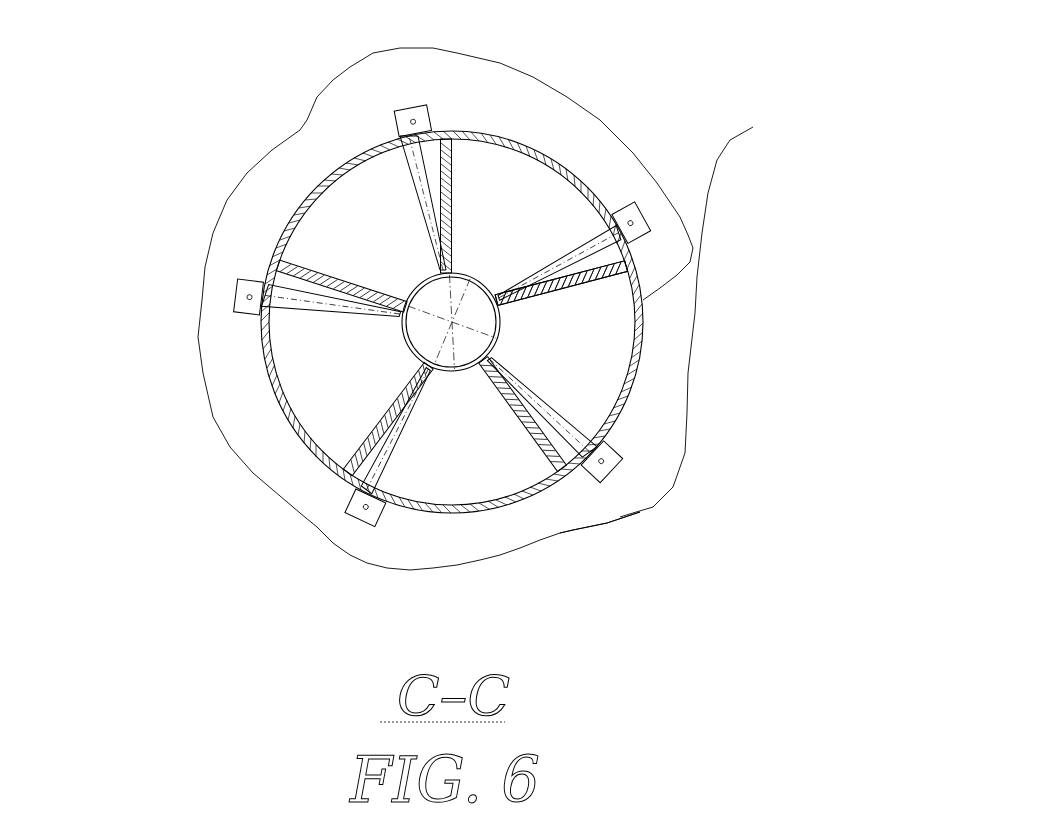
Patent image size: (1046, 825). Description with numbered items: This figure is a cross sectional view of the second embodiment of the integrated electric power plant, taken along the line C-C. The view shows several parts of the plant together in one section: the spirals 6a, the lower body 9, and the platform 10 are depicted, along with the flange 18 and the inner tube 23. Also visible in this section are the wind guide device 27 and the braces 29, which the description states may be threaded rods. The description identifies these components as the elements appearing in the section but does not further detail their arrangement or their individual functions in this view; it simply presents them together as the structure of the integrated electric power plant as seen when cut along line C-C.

The spirals 6a is at (345, 307).
The lower body 9 is at (737, 304).
The platform 10 is at (530, 349).
The flange 18 is at (711, 518).
The inner tube 23 is at (675, 329).
The wind guide device 27 is at (311, 229).
The braces (or threaded rods) 29 is at (486, 272).